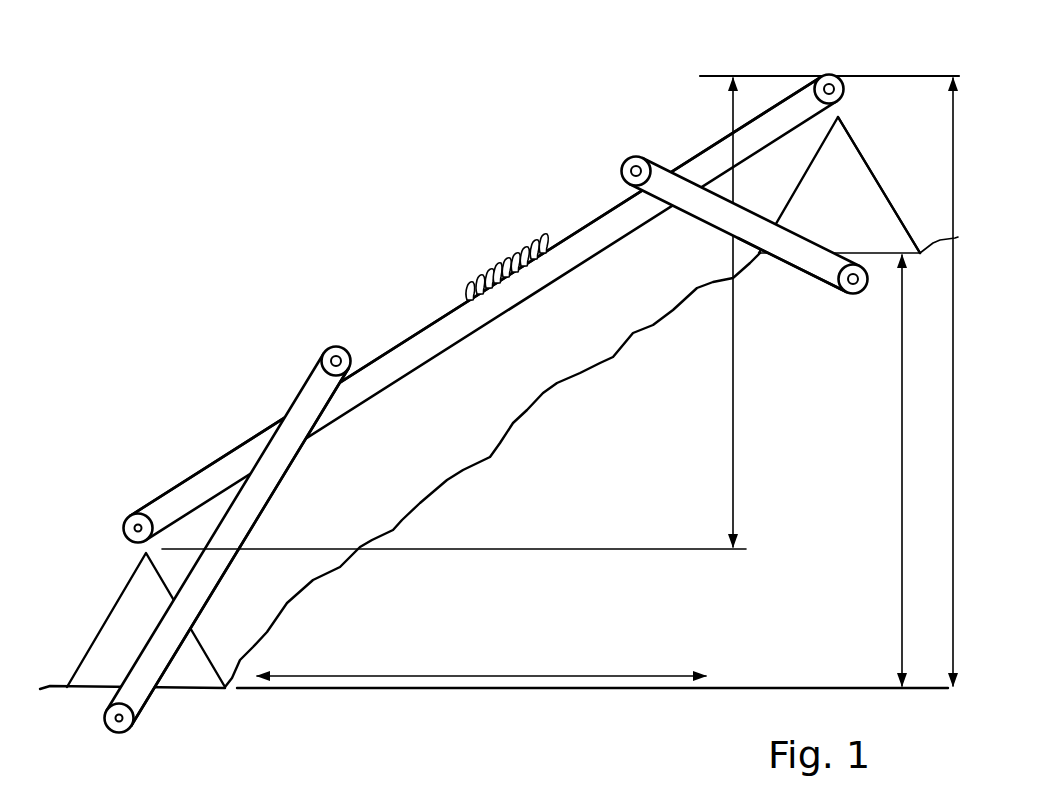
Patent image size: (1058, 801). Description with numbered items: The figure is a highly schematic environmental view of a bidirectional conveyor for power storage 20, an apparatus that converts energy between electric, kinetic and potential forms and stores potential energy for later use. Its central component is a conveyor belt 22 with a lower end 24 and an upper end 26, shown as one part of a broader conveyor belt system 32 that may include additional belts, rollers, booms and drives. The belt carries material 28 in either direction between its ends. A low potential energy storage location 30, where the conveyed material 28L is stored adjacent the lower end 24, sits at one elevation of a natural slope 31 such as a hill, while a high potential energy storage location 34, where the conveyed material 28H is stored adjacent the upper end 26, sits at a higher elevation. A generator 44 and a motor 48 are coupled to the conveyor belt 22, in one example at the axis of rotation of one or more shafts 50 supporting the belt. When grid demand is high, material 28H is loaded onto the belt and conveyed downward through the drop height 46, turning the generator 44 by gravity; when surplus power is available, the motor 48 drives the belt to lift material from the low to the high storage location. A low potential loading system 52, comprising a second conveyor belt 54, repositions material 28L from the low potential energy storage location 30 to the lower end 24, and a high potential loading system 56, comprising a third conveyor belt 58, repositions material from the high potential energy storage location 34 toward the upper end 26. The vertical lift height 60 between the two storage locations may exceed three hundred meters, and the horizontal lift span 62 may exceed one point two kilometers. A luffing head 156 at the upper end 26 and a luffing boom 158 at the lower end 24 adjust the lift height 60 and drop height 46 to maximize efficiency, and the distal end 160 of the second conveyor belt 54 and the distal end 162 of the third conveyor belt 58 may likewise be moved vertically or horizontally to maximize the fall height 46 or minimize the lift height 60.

The bidirectional conveyor for power storage 20 is at (288, 260).
The conveyor belt 22 is at (466, 295).
The lower end 24 is at (135, 514).
The upper end 26 is at (832, 76).
The material 28 is at (497, 253).
The conveyed material at high potential storage location 28H is at (872, 237).
The conveyed material at low potential storage location 28L is at (192, 678).
The low potential energy storage location 30 is at (86, 678).
The natural slope 31 is at (490, 455).
The conveyor belt system 32 is at (280, 352).
The high potential energy storage location 34 is at (885, 188).
The generator 44 is at (813, 80).
The drop height 46 is at (730, 450).
The motor 48 is at (822, 79).
The shaft 50 is at (138, 523).
The low potential loading system 52 is at (229, 569).
The second conveyor belt 54 is at (288, 474).
The high potential loading system 56 is at (777, 258).
The third conveyor belt 58 is at (683, 213).
The vertical lift height 60 is at (952, 533).
The horizontal lift span 62 is at (623, 675).
The luffing head 156 is at (646, 141).
The luffing boom 158 is at (220, 456).
The distal end of second conveyor belt 160 is at (142, 712).
The distal end of third conveyor belt 162 is at (833, 249).